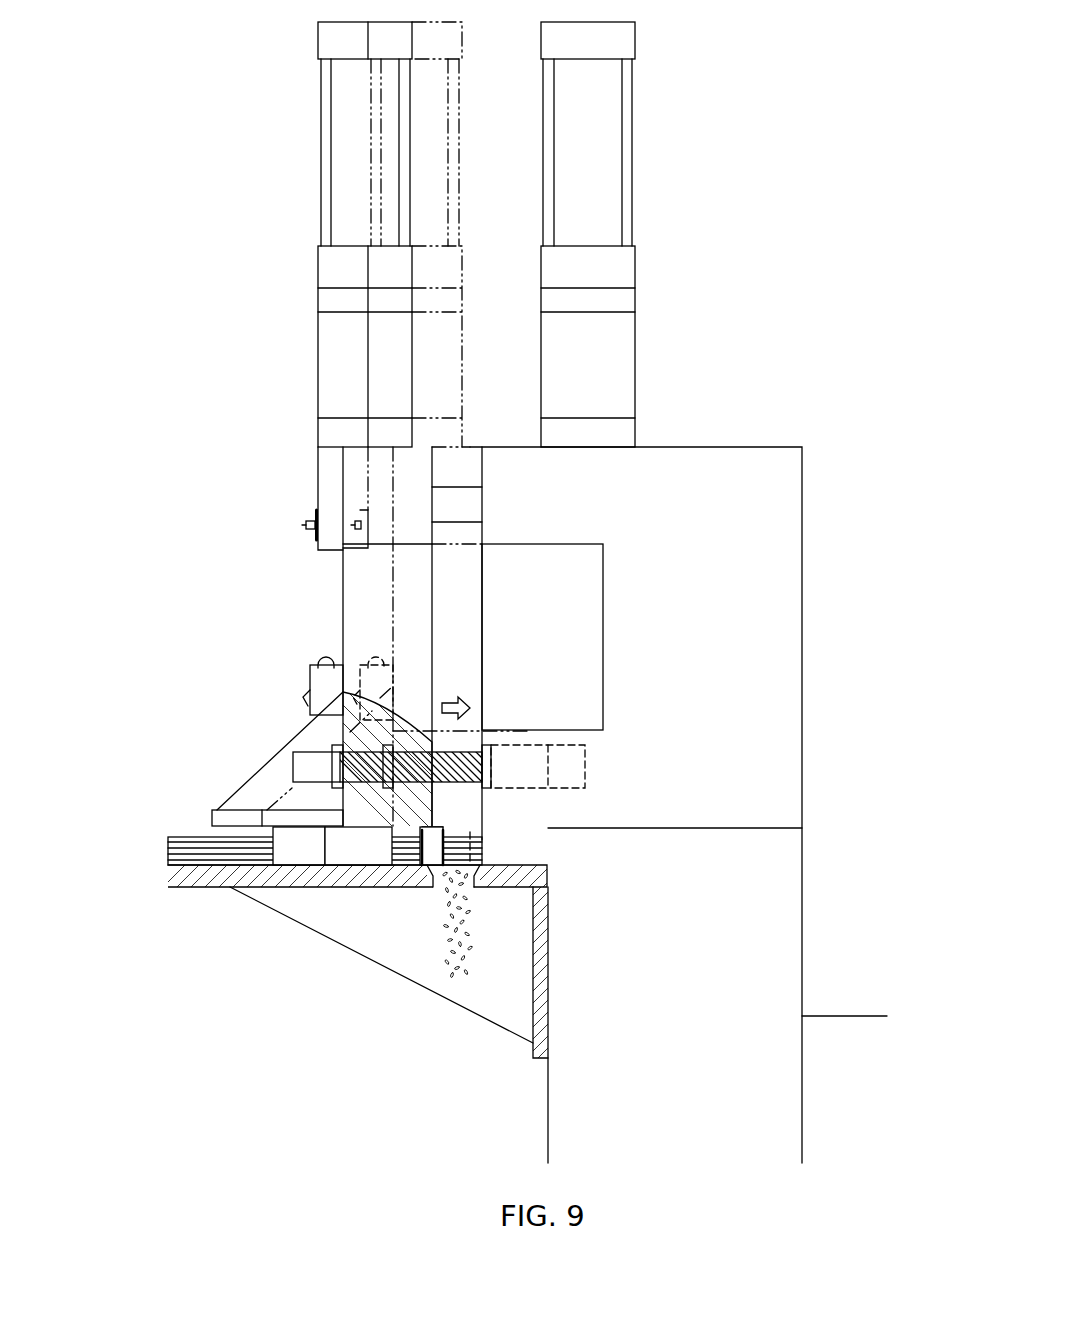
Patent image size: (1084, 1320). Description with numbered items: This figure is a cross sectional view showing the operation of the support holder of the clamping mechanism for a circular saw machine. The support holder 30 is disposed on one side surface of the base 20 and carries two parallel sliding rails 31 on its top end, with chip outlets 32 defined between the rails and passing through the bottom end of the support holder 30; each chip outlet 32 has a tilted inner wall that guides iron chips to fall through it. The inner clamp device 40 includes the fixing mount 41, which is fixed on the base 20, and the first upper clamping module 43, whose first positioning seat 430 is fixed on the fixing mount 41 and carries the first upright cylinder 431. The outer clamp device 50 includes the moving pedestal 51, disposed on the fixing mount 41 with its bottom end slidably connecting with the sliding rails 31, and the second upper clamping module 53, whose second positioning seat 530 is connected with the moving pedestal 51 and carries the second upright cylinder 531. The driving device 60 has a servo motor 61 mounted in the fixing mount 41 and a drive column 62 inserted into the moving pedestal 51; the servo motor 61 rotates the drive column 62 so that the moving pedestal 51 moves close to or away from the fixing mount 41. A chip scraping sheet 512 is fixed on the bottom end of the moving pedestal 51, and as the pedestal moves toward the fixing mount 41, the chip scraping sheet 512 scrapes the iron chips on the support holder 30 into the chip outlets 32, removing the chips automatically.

The base 20 is at (562, 1119).
The support holder 30 is at (212, 888).
The sliding rails 31 is at (170, 850).
The chip outlets 32 is at (468, 886).
The inner clamp device 40 is at (659, 592).
The fixing mount 41 is at (748, 455).
The first upper clamping module 43 is at (646, 234).
The first positioning seat 430 is at (633, 362).
The first upright cylinder 431 is at (600, 157).
The outer clamp device 50 is at (312, 234).
The moving pedestal 51 is at (365, 495).
The chip scraping sheet 512 is at (422, 830).
The second upper clamping module 53 is at (341, 234).
The second positioning seat 530 is at (333, 365).
The second upright cylinder 531 is at (342, 131).
The driving device 60 is at (344, 740).
The servo motor 61 is at (585, 770).
The drive column 62 is at (298, 750).